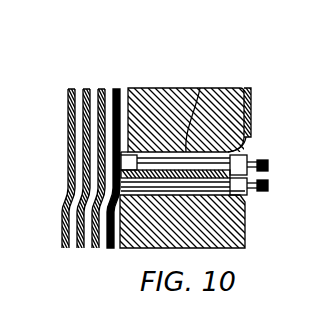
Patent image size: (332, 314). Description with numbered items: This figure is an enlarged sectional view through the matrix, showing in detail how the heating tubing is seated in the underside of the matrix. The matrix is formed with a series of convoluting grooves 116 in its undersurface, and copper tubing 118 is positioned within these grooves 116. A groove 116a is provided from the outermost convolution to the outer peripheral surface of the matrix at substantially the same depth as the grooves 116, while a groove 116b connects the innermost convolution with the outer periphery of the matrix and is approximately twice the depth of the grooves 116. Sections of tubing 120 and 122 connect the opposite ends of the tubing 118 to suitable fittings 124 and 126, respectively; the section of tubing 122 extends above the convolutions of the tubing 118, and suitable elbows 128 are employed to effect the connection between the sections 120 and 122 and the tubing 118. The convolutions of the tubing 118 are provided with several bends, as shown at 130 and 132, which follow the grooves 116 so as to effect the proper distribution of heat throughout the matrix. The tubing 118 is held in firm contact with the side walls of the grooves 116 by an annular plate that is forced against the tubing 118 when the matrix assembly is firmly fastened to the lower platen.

The convoluting grooves 116 is at (100, 89).
The groove 116a is at (190, 100).
The groove 116b is at (248, 205).
The copper tubing 118 is at (72, 89).
The section of tubing 120 is at (240, 148).
The section of tubing 122 is at (252, 177).
The fitting 124 is at (263, 160).
The fitting 126 is at (258, 191).
The elbows 128 is at (134, 156).
The bend 130 is at (82, 183).
The bend 132 is at (95, 224).